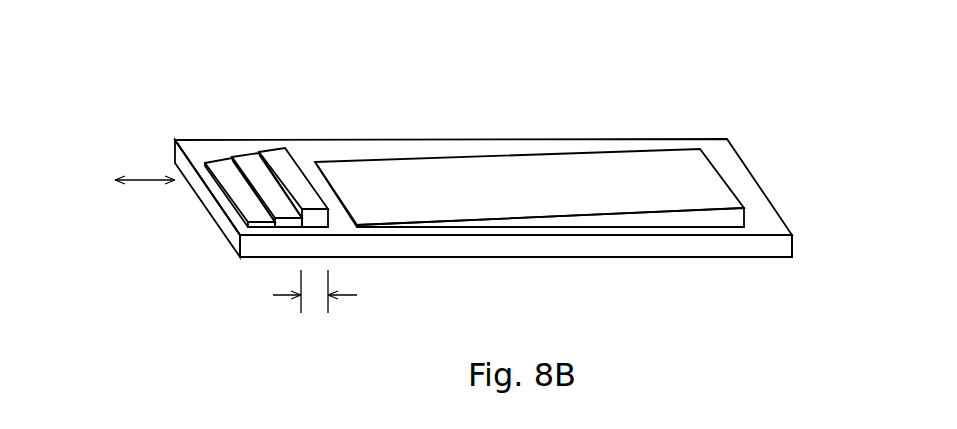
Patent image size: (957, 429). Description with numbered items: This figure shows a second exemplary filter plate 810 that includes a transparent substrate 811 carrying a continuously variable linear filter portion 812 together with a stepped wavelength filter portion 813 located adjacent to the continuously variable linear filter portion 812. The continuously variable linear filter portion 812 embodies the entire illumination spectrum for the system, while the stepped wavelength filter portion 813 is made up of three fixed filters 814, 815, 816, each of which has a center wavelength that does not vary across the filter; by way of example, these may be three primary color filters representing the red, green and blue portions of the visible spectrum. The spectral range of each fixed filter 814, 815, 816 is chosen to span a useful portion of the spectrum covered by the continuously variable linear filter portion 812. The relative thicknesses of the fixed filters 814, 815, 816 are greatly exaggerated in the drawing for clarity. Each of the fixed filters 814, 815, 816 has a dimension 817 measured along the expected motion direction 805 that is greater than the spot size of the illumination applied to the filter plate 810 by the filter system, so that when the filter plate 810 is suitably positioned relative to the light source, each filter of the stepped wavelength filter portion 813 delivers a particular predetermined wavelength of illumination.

The expected motion direction 805 is at (147, 181).
The filter plate 810 is at (757, 156).
The transparent substrate 811 is at (792, 245).
The continuously variable linear filter portion 812 is at (555, 175).
The stepped wavelength filter portion 813 is at (165, 143).
The fixed filter 814 is at (223, 169).
The fixed filter 815 is at (251, 165).
The fixed filter 816 is at (281, 153).
The dimension 817 is at (315, 295).